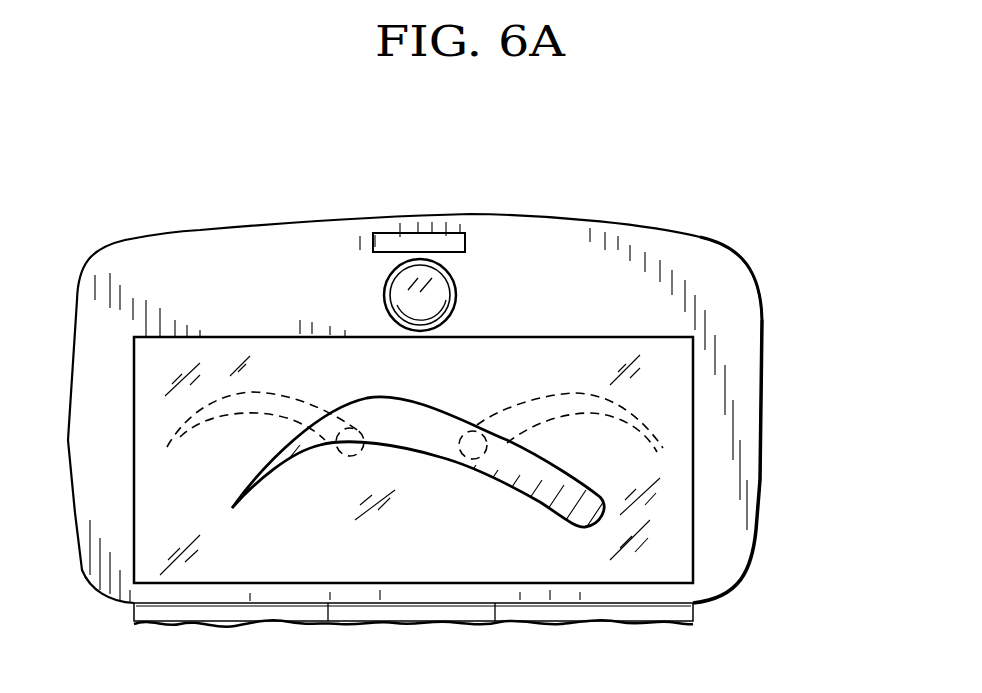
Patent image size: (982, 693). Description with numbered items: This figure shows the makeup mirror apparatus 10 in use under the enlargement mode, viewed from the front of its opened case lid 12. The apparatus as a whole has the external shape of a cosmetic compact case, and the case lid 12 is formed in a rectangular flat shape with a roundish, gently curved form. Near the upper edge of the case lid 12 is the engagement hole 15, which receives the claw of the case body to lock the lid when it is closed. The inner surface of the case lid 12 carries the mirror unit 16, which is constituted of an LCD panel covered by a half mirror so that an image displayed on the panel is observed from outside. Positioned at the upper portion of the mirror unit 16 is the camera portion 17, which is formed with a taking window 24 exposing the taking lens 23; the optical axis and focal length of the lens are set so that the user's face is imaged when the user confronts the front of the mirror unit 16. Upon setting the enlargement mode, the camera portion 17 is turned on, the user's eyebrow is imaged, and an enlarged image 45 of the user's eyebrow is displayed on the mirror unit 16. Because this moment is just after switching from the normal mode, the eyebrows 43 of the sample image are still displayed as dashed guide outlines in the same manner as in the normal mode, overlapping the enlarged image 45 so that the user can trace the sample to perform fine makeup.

The makeup mirror apparatus 10 is at (479, 359).
The case lid 12 is at (770, 304).
The engagement hole 15 is at (363, 233).
The mirror unit 16 is at (148, 397).
The camera portion 17 is at (445, 315).
The taking lens 23 is at (421, 310).
The taking window 24 is at (388, 297).
The eyebrows of the sample image 43 is at (229, 380).
The enlarged image of the user's eyebrow 45 is at (580, 545).